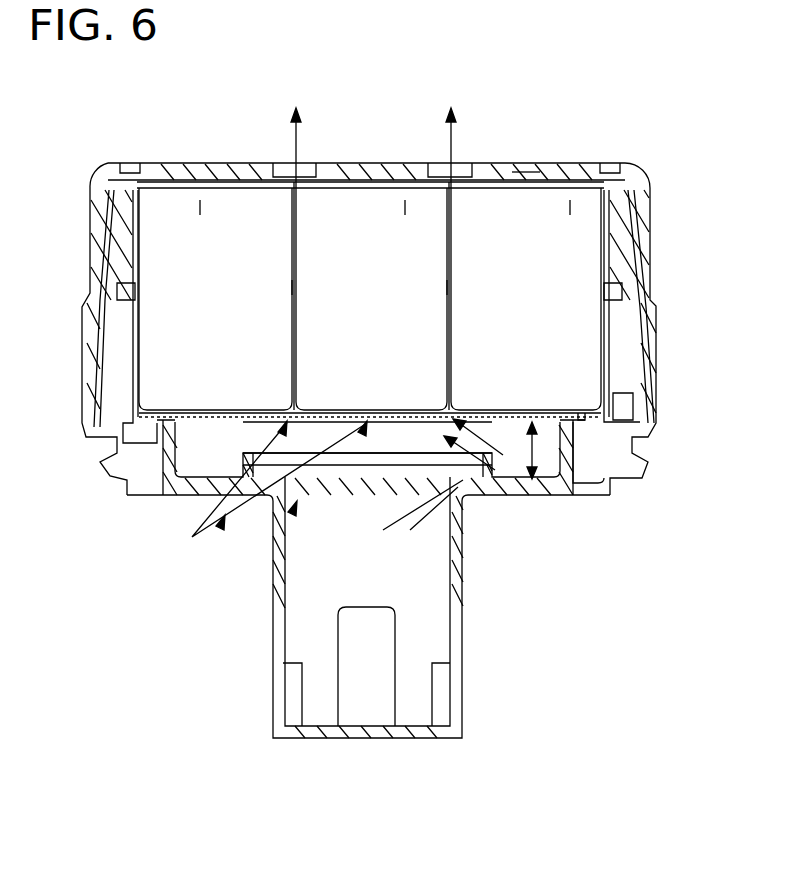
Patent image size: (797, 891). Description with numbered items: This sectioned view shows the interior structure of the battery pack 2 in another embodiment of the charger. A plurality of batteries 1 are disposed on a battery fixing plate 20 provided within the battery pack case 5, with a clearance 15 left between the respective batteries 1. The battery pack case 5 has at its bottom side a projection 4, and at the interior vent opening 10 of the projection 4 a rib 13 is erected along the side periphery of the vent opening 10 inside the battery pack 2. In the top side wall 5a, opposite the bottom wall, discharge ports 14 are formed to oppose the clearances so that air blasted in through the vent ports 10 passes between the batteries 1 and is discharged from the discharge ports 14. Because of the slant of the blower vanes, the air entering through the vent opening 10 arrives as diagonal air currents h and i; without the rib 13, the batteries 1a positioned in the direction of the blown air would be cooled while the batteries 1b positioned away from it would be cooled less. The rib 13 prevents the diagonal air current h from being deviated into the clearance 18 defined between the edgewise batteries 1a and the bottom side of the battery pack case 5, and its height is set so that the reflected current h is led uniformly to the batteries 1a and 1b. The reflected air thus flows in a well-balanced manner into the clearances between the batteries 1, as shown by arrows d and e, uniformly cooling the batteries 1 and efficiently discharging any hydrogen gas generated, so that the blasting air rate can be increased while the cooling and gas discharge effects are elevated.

The batteries 1 is at (173, 213).
The batteries positioned in the direction of blown air current 1a is at (580, 218).
The batteries positioned not in the direction of blown air current 1b is at (215, 213).
The battery pack 2 is at (648, 251).
The projection 4 is at (457, 600).
The battery pack case 5 is at (647, 200).
The top side wall 5a is at (528, 173).
The vent ports 10 is at (370, 472).
The rib 13 is at (530, 463).
The discharge ports 14 is at (282, 167).
The clearance between the respective batteries 15 is at (292, 336).
The clearance between the batteries and the bottom side of the case 18 is at (537, 453).
The battery fixing plate 20 is at (393, 417).
The arrow d is at (292, 292).
The arrow e is at (297, 146).
The diagonal air current h is at (437, 513).
The diagonal air current i is at (270, 496).